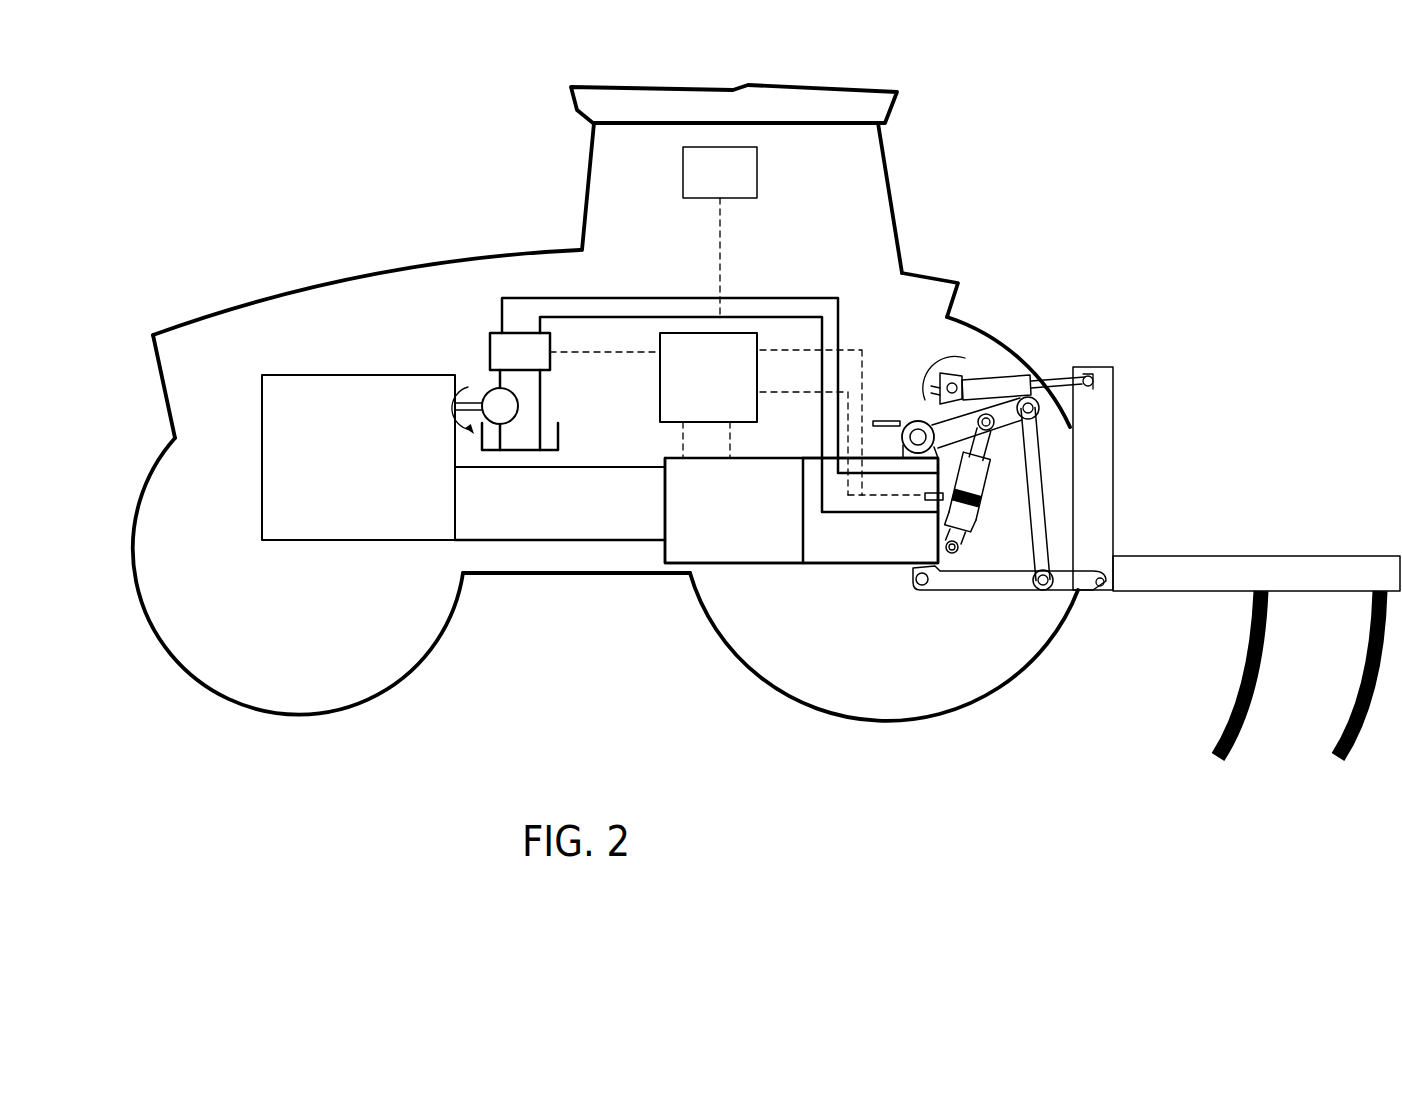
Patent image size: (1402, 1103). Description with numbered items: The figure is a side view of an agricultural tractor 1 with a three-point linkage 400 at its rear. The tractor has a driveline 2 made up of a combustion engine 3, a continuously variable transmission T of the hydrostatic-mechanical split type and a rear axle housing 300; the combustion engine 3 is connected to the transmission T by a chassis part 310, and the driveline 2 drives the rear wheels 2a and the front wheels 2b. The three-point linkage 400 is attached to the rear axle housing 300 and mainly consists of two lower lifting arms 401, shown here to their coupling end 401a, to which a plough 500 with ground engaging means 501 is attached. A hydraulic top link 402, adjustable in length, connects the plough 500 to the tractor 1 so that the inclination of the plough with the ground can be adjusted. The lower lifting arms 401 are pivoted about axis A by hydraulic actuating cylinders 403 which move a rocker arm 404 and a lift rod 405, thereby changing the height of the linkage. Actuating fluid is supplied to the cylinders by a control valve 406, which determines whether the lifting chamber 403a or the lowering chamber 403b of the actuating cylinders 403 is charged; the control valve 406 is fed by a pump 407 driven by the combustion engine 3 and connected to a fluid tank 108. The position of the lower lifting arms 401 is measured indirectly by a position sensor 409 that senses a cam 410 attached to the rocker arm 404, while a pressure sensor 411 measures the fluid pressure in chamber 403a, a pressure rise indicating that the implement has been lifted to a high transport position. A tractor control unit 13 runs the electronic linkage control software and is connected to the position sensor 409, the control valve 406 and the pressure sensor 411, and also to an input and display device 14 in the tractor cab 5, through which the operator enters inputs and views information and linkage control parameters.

The agricultural tractor 1 is at (717, 429).
The driveline 2 is at (605, 542).
The rear wheels 2a is at (805, 690).
The front wheels 2b is at (277, 698).
The combustion engine 3 is at (380, 458).
The tractor cab 5 is at (615, 193).
The tractor control unit 13 is at (677, 355).
The input and display device 14 is at (725, 182).
The fluid tank 108 is at (560, 445).
The rear axle housing 300 is at (887, 542).
The chassis part 310 is at (528, 500).
The three-point linkage 400 is at (1066, 487).
The lower lifting arms 401 is at (1002, 693).
The lower link coupling point 401a is at (1078, 594).
The top link 402 is at (1008, 378).
The hydraulic actuating cylinders 403 is at (1123, 428).
The chamber 403a is at (975, 514).
The chamber 403b is at (977, 473).
The rocker arm 404 is at (996, 382).
The lift rod 405 is at (1050, 511).
The control valve 406 is at (520, 352).
The pump 407 is at (498, 403).
The position sensor 409 is at (875, 416).
The cam 410 is at (913, 424).
The pressure sensor 411 is at (925, 496).
The plough 500 is at (1256, 590).
The ground engaging means 501 is at (1218, 760).
The axis A is at (903, 577).
The continuously variable transmission T is at (690, 532).